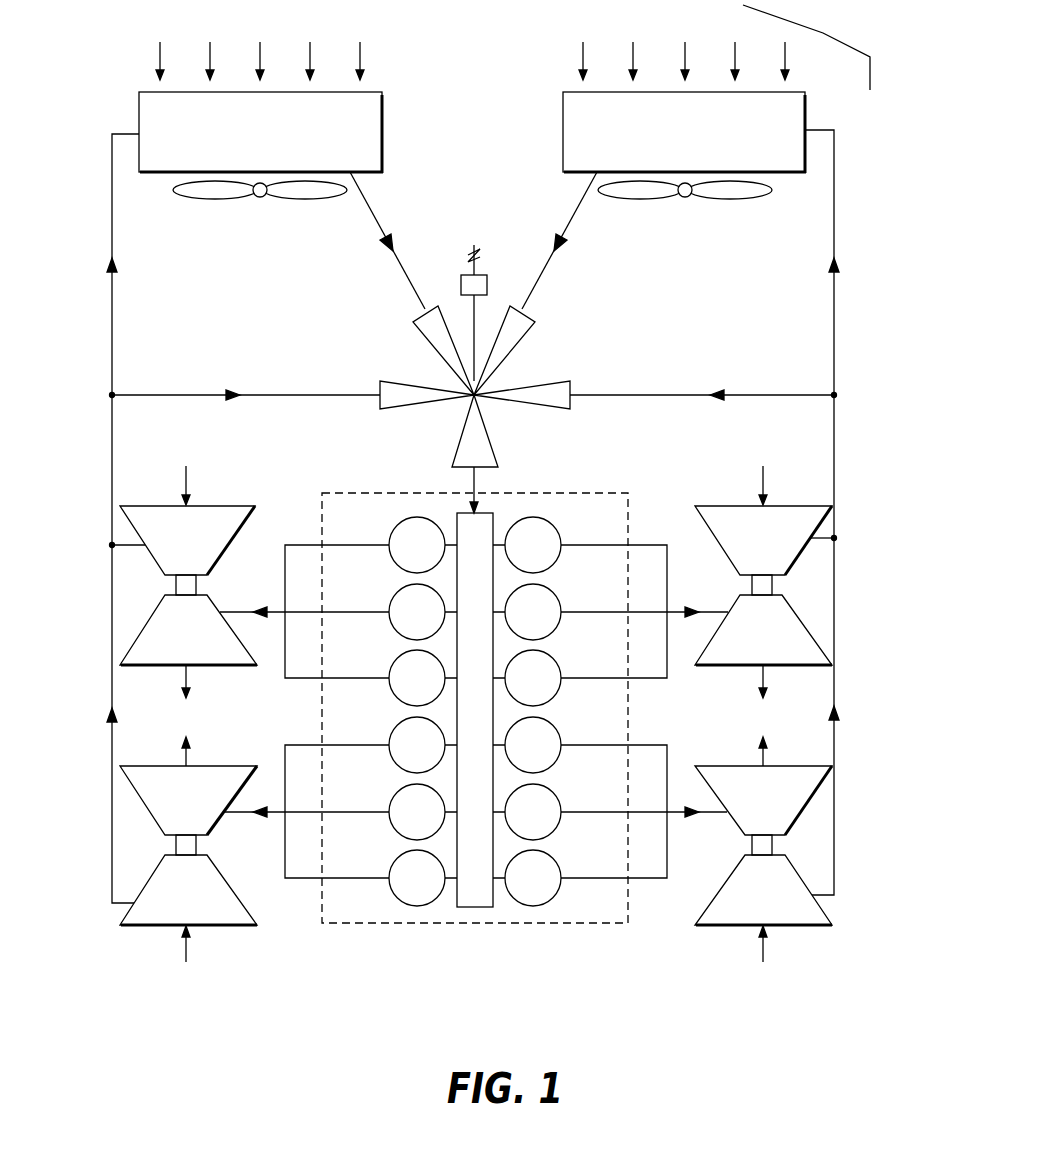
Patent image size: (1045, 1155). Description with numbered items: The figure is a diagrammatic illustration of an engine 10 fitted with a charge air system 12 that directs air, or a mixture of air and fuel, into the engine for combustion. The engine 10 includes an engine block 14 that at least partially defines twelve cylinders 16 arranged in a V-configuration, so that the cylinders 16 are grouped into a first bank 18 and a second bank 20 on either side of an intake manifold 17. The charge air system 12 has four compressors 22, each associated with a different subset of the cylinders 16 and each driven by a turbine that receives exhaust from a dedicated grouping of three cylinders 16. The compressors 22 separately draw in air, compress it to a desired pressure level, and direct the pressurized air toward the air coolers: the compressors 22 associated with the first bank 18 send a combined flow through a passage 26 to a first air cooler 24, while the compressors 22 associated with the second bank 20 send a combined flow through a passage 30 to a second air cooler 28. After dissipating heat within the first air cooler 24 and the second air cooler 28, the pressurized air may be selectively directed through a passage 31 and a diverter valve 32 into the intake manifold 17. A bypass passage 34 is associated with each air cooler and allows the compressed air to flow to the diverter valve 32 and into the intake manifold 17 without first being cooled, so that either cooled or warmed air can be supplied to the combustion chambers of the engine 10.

The engine 10 is at (628, 968).
The charge air system 12 is at (823, 33).
The engine block 14 is at (355, 924).
The cylinders 16 is at (475, 711).
The intake manifold 17 is at (493, 527).
The first bank 18 is at (447, 939).
The second bank 20 is at (566, 939).
The compressors 22 is at (232, 505).
The first air cooler 24 is at (383, 132).
The passage 26 is at (113, 345).
The second air cooler 28 is at (563, 134).
The passage 30 is at (833, 340).
The passage 31 is at (372, 212).
The diverter valve 32 is at (558, 343).
The bypass passage 34 is at (287, 394).